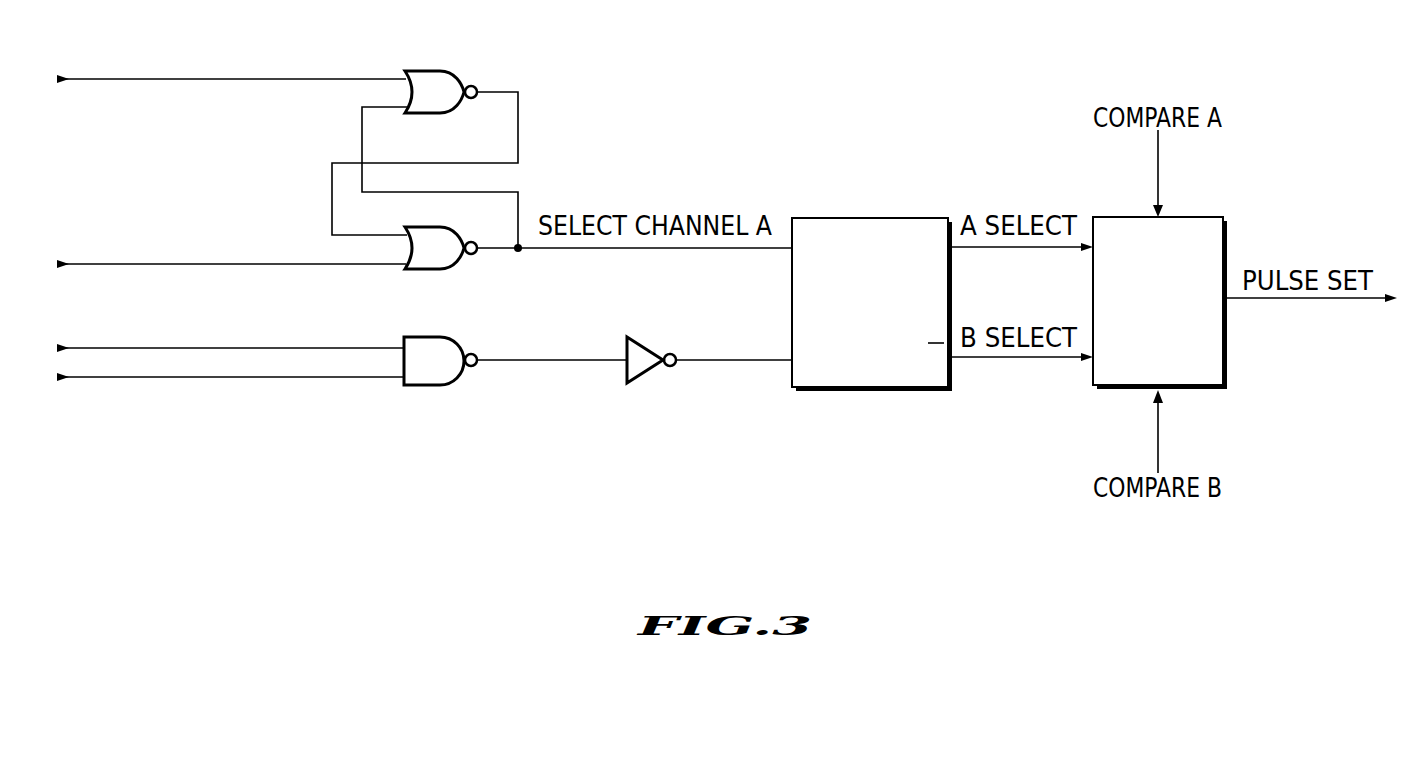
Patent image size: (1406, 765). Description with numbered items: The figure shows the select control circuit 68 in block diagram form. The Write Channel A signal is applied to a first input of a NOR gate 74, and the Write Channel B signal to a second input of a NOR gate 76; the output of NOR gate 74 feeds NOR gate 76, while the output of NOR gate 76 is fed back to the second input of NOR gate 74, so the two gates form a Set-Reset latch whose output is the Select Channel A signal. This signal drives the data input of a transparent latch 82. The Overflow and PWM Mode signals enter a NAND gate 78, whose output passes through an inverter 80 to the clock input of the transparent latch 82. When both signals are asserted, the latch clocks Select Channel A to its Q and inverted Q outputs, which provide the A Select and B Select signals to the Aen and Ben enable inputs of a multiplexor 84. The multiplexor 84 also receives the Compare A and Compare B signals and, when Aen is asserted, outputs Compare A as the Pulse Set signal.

The select control circuit 68 is at (196, 474).
The NOR gate 74 is at (443, 104).
The NOR gate 76 is at (443, 260).
The NAND gate 78 is at (439, 374).
The inverter 80 is at (642, 343).
The transparent latch 82 is at (898, 357).
The multiplexor 84 is at (1214, 371).